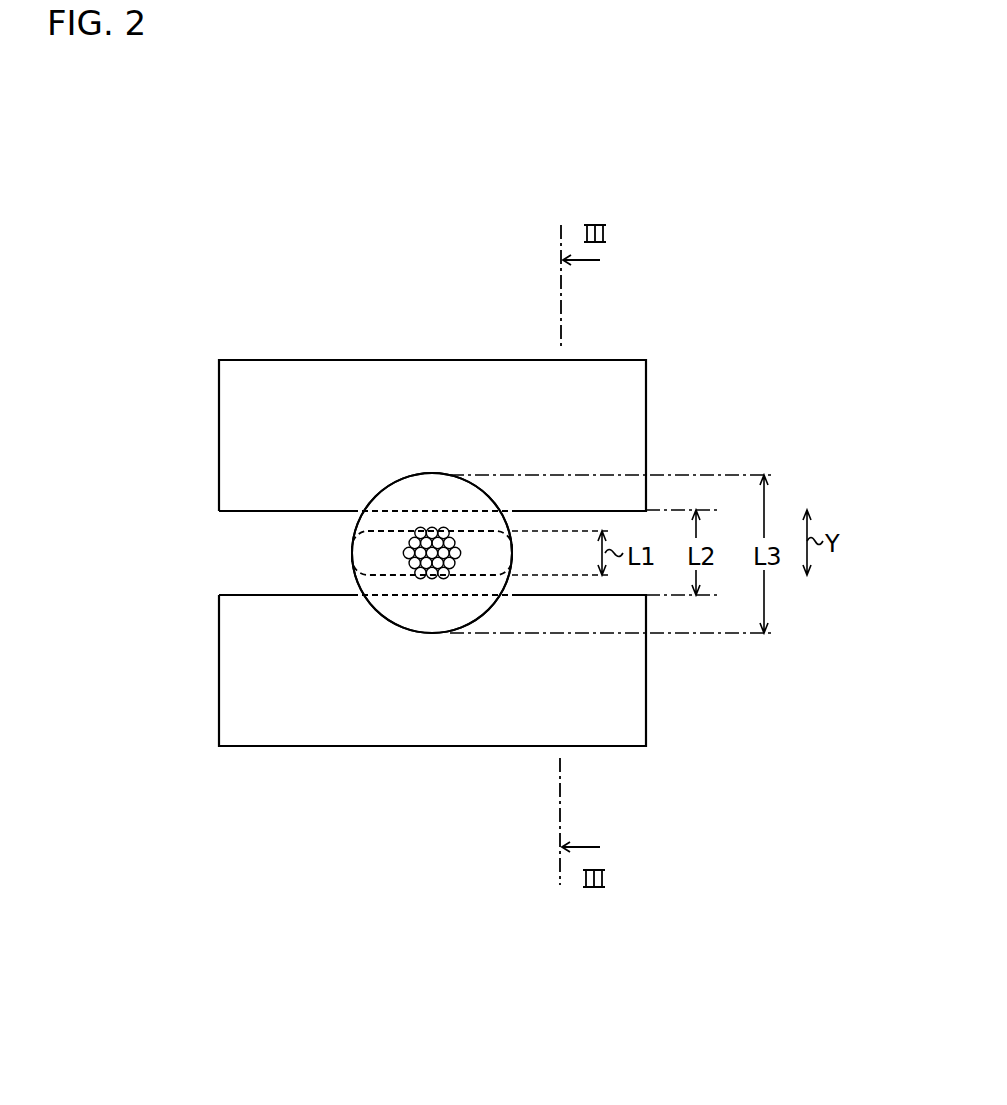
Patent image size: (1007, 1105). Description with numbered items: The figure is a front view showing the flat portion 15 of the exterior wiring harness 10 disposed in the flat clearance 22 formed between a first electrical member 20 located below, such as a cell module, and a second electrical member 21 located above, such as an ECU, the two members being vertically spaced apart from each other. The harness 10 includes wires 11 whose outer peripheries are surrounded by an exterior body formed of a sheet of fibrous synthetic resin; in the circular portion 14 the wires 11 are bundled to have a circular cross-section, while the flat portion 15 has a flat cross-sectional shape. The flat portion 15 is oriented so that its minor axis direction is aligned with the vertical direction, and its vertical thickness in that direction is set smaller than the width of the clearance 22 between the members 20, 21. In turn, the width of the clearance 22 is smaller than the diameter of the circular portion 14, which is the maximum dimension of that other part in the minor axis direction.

The exterior wiring harness 10 is at (381, 462).
The wires 11 is at (416, 567).
The circular portion 14 is at (403, 497).
The flat portion 15 is at (375, 531).
The first electrical member 20 is at (617, 705).
The second electrical member 21 is at (617, 397).
The clearance 22 is at (288, 511).